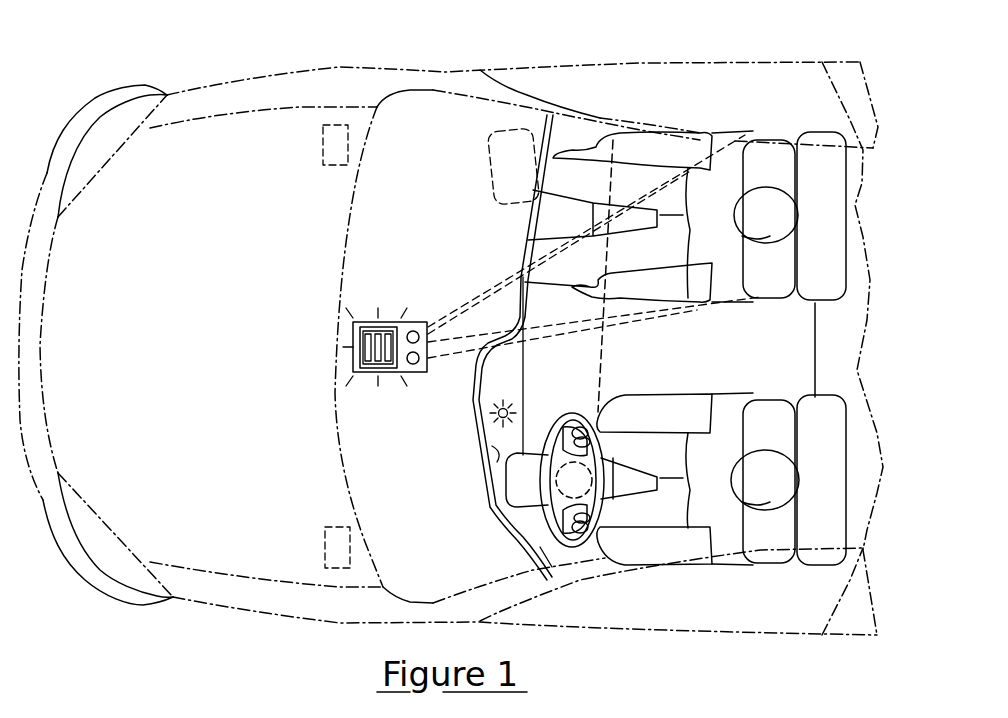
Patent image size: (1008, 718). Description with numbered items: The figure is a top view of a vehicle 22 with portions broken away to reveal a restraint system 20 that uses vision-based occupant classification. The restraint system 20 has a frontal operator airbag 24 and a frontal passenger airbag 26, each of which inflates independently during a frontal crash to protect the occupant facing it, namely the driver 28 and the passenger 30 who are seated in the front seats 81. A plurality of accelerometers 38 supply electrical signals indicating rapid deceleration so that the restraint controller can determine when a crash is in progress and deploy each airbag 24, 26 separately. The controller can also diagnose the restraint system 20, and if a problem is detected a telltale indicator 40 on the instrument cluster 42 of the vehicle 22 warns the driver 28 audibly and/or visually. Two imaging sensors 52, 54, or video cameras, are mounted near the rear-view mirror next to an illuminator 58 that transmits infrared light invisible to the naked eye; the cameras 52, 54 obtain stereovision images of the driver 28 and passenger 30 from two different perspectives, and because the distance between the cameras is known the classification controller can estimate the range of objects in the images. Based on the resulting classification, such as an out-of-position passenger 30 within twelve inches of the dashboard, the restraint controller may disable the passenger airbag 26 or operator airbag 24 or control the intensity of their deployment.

The vehicle 22 is at (322, 58).
The restraint system 20 is at (388, 240).
The frontal operator airbag 24 is at (552, 477).
The frontal passenger airbag 26 is at (496, 162).
The driver 28 is at (765, 417).
The passenger 30 is at (766, 160).
The accelerometers 38 is at (320, 147).
The telltale indicator 40 is at (495, 412).
The instrument cluster 42 is at (492, 452).
The imaging sensor 52 is at (413, 364).
The imaging sensor 54 is at (412, 331).
The illuminator 58 is at (390, 326).
The front seats 81 is at (817, 213).